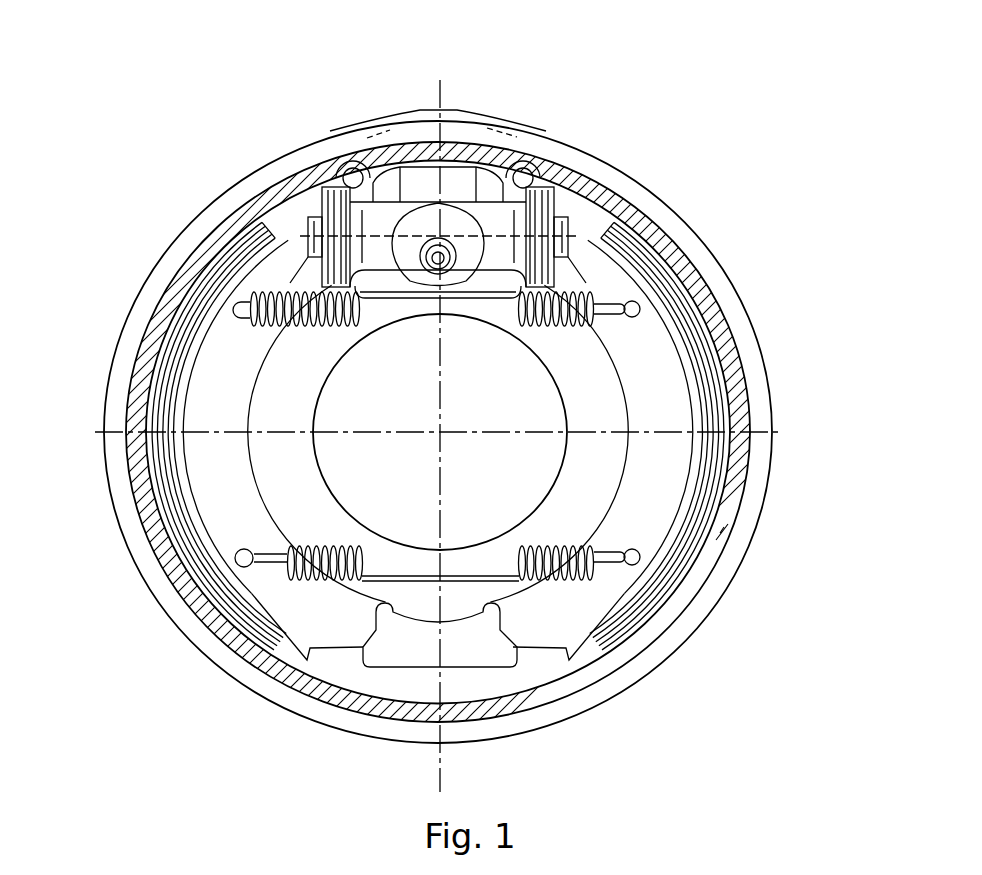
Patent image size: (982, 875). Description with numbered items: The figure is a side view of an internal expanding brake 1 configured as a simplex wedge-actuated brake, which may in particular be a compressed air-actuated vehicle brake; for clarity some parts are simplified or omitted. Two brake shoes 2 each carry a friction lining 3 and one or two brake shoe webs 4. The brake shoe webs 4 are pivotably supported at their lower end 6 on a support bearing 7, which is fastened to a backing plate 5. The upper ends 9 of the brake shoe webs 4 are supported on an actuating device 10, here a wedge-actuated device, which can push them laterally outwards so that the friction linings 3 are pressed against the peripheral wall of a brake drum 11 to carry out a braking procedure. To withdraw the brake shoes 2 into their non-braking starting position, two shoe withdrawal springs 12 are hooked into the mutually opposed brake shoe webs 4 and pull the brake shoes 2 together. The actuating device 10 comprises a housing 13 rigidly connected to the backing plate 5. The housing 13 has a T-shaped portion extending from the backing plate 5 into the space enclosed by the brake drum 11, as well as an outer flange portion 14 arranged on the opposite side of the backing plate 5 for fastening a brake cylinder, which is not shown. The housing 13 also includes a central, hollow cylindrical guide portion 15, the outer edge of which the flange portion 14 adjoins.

The internal expanding brake 1 is at (722, 80).
The brake shoes 2 is at (197, 283).
The friction lining 3 is at (163, 380).
The brake shoe webs 4 is at (218, 488).
The backing plate 5 is at (488, 680).
The lower end 6 is at (378, 630).
The support bearing 7 is at (417, 642).
The upper ends 9 is at (302, 228).
The actuating device 10 is at (490, 190).
The brake drum 11 is at (720, 533).
The shoe withdrawal springs 12 is at (580, 288).
The housing 13 is at (383, 223).
The outer flange portion 14 is at (442, 110).
The guide portion 15 is at (450, 180).